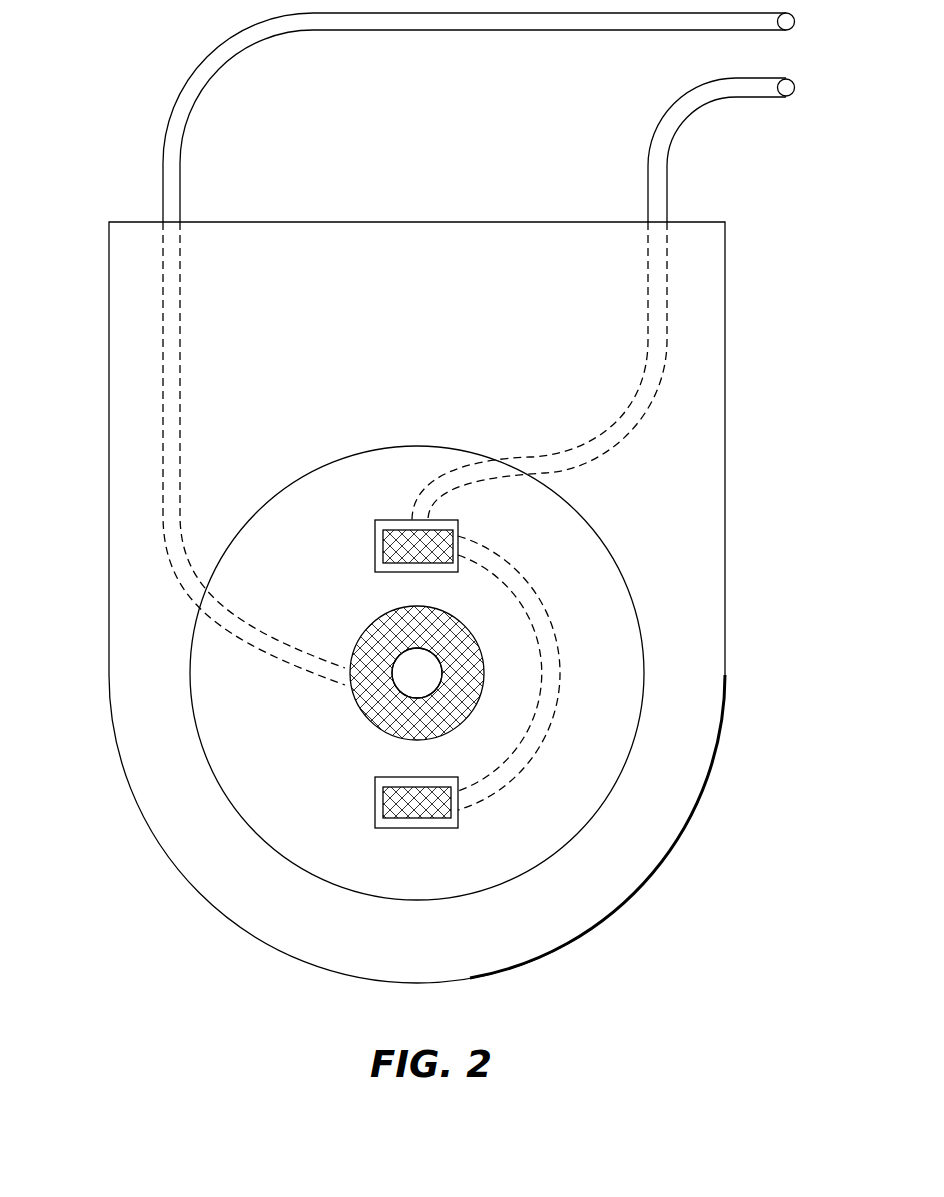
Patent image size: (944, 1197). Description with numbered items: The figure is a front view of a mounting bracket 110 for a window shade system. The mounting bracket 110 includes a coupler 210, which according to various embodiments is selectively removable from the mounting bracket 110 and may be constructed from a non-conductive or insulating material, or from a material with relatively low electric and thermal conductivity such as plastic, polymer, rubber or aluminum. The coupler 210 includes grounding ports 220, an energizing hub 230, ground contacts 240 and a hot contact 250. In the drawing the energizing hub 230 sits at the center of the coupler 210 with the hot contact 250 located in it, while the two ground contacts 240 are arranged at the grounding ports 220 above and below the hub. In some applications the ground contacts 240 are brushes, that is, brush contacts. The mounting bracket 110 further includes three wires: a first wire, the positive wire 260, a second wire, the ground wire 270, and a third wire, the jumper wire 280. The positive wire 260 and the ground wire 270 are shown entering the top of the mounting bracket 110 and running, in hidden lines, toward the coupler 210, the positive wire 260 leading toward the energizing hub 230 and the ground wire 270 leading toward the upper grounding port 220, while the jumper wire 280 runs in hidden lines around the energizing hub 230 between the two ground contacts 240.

The mounting bracket 110 is at (771, 357).
The coupler 210 is at (647, 622).
The grounding ports 220 is at (463, 511).
The energizing hub 230 is at (491, 660).
The ground contacts 240 is at (460, 539).
The hot contact 250 is at (397, 700).
The positive wire 260 is at (200, 131).
The ground wire 270 is at (687, 142).
The jumper wire 280 is at (559, 713).